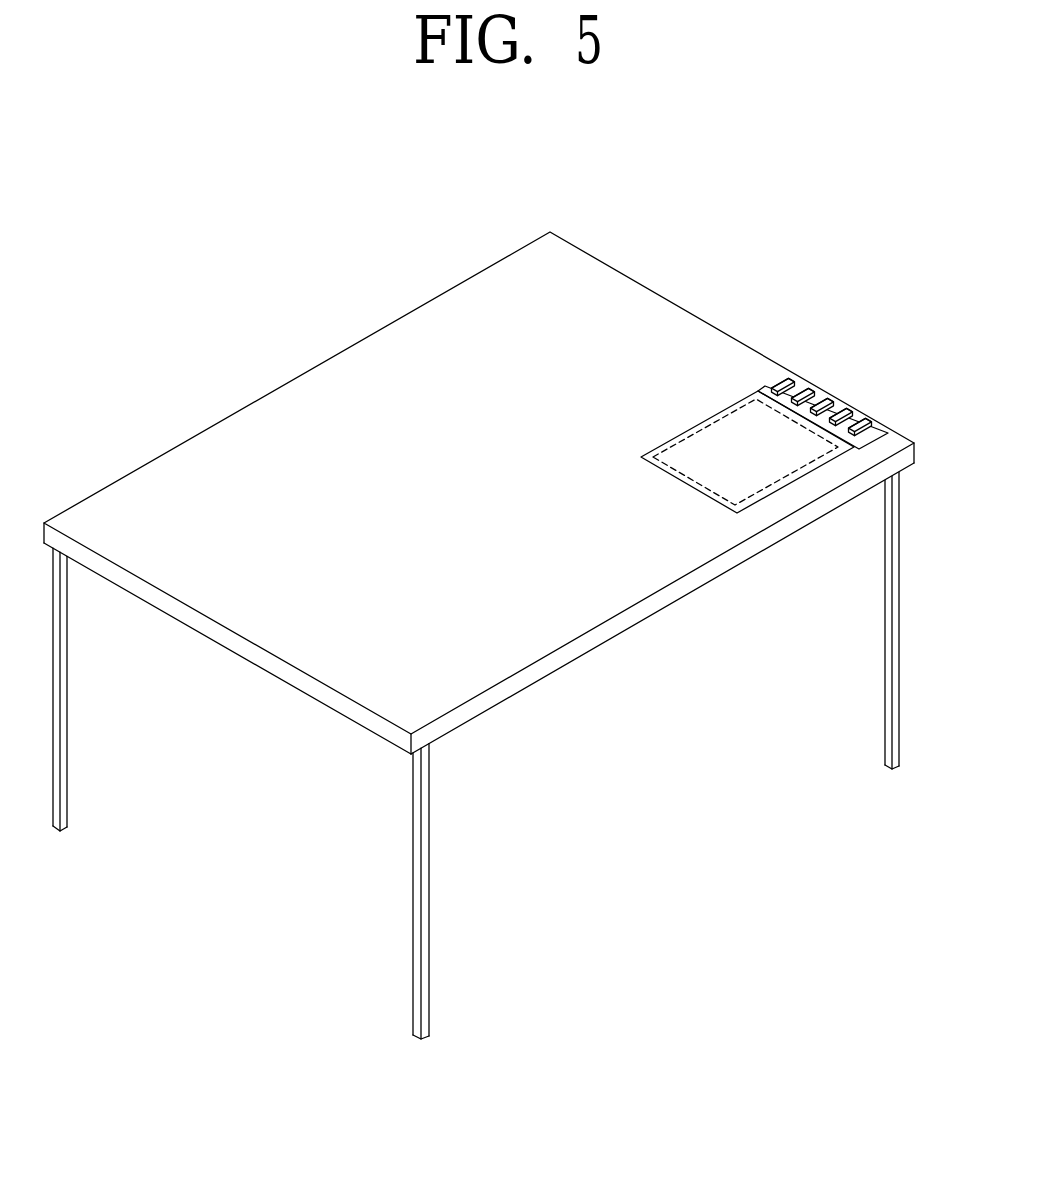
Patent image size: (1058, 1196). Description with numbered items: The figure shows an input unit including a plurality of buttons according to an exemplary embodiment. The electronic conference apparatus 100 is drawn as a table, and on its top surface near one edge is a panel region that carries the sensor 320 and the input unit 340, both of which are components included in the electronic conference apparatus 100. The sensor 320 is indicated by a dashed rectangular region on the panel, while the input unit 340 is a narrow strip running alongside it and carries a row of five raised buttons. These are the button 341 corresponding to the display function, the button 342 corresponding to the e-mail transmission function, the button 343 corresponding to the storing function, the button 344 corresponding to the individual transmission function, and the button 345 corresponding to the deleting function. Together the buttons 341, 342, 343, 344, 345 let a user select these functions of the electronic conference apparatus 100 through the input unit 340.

The electronic conference apparatus 100 is at (683, 307).
The sensor 320 is at (797, 472).
The input unit 340 is at (890, 433).
The button 341 is at (790, 376).
The button 342 is at (810, 389).
The button 343 is at (830, 400).
The button 344 is at (849, 411).
The button 345 is at (869, 422).